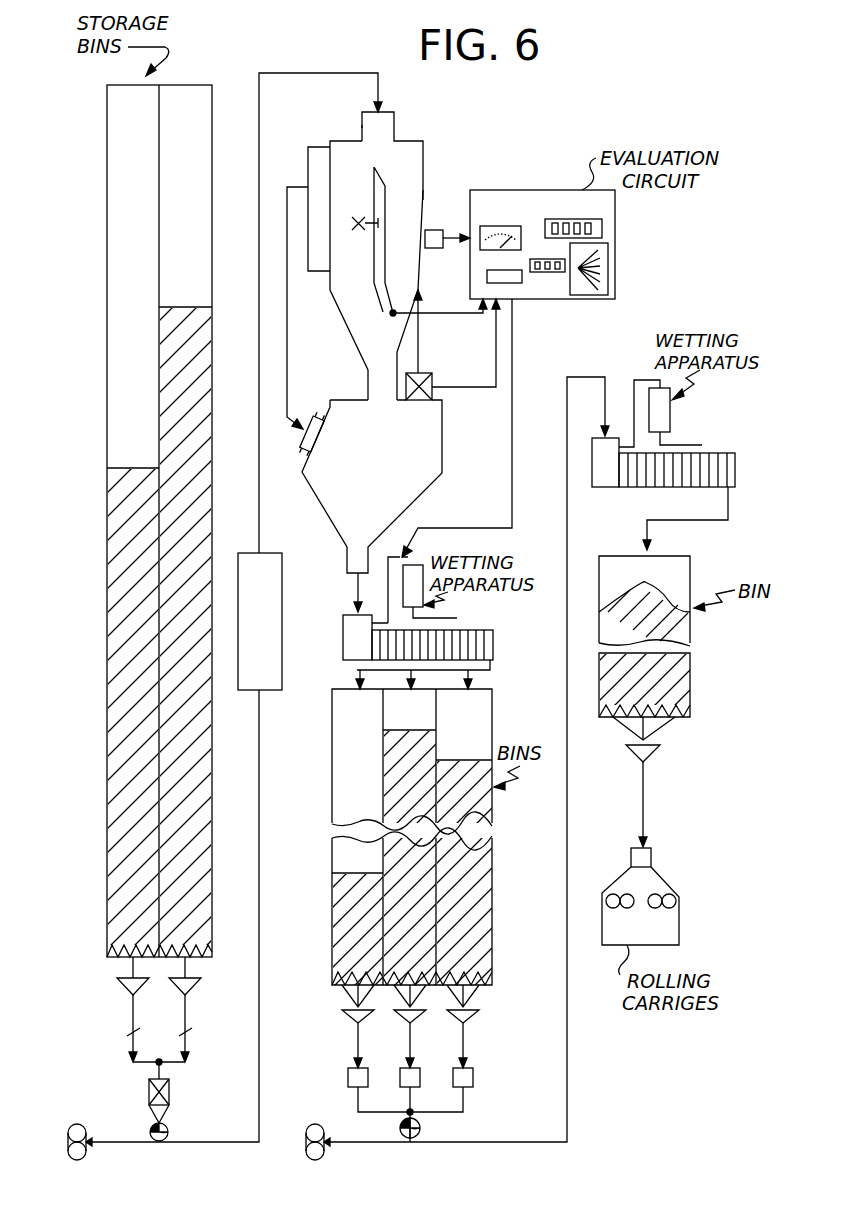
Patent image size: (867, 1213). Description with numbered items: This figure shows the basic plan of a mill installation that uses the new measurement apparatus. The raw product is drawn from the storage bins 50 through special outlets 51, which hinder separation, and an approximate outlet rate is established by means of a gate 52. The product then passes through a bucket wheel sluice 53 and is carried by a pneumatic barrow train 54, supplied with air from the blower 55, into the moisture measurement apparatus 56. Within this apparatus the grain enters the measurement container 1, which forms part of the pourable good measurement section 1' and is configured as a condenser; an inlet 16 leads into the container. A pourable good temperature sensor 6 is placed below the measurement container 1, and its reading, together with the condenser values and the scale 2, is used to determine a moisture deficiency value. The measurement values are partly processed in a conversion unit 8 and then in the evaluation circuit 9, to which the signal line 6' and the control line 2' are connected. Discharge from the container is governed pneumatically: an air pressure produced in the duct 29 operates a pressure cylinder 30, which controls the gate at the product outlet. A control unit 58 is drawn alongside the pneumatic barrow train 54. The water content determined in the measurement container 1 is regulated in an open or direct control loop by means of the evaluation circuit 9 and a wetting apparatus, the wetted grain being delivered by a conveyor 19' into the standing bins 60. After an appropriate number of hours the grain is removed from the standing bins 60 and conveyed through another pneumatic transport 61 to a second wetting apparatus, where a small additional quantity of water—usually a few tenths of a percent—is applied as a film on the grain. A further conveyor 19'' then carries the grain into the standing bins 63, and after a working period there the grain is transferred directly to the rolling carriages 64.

The measurement container 1 is at (389, 256).
The pourable good measurement section 1' is at (441, 166).
The scale 2 is at (424, 345).
The control line 2' is at (466, 343).
The pourable good temperature sensor 6 is at (374, 259).
The signal line 6' is at (440, 300).
The conversion unit 8 is at (432, 230).
The evaluation circuit 9 is at (520, 190).
The inlet 16 is at (346, 140).
The conveyor 19' is at (443, 652).
The conveyor 19'' is at (694, 485).
The duct 29 is at (288, 308).
The pressure cylinder 30 is at (303, 437).
The storage bins 50 is at (146, 226).
The special outlets 51 is at (124, 988).
The gate 52 is at (126, 1033).
The bucket wheel sluice 53 is at (152, 1128).
The pneumatic barrow train 54 is at (260, 996).
The blower 55 is at (72, 1122).
The moisture measurement apparatus 56 is at (338, 366).
The control unit 58 is at (272, 620).
The standing bins 60 is at (478, 712).
The pneumatic transport 61 is at (566, 900).
The standing bins 63 is at (682, 566).
The rolling carriages 64 is at (648, 880).